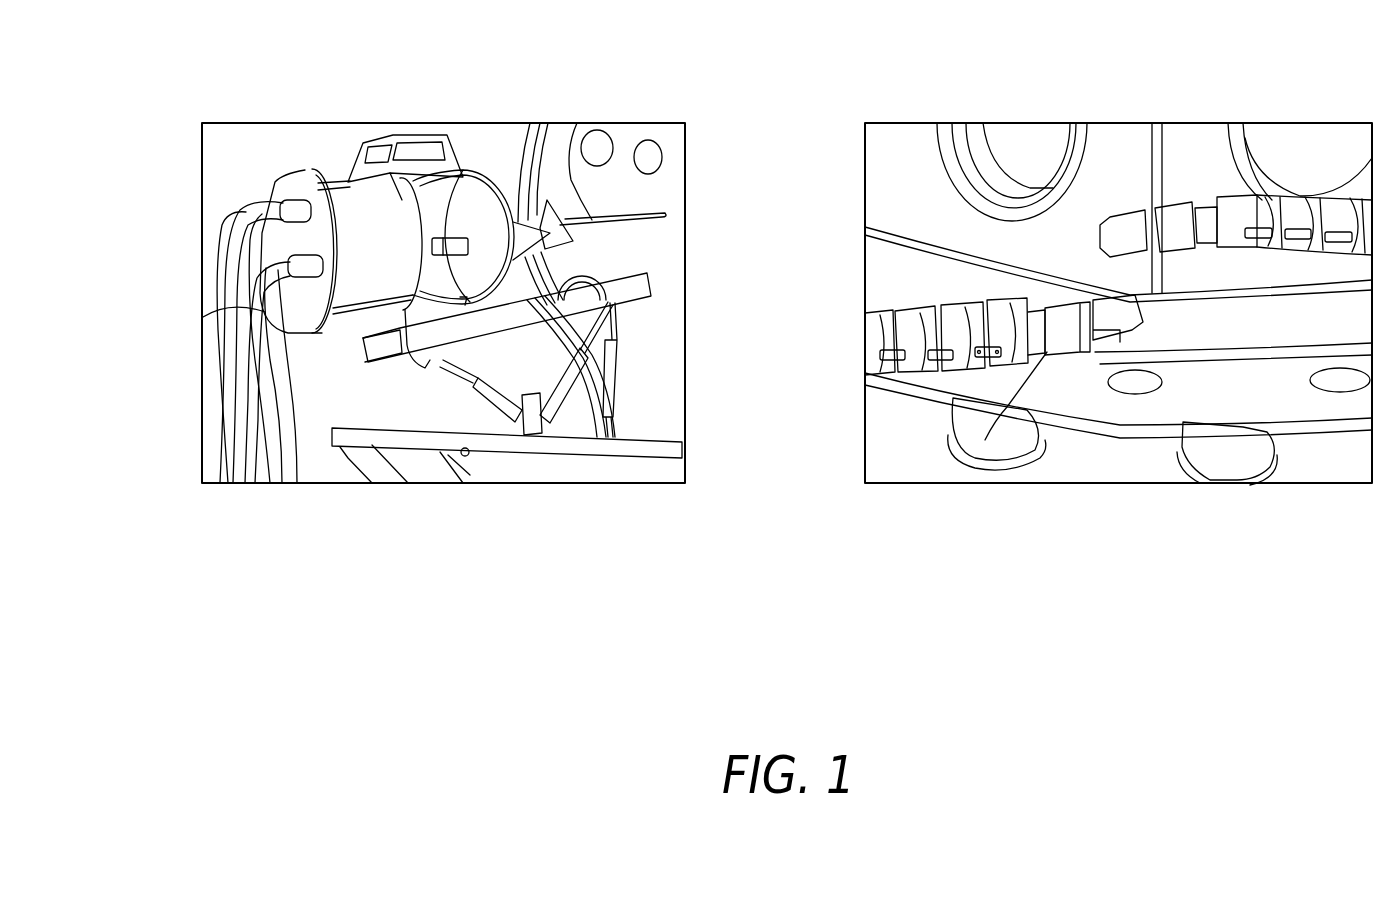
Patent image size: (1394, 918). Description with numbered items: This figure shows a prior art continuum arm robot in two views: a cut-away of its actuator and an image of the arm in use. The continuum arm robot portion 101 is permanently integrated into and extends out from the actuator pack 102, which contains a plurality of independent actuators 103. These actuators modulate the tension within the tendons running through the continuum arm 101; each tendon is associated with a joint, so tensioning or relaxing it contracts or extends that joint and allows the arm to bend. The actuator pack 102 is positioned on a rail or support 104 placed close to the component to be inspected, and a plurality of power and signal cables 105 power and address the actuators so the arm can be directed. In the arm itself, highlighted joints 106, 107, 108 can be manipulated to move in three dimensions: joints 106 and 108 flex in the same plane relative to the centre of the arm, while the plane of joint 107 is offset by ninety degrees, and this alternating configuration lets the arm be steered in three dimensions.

The continuum arm robot portion 101 is at (578, 122).
The actuator pack 102 is at (350, 182).
The independent actuators 103 is at (447, 236).
The rail or support 104 is at (640, 298).
The power and signal cables 105 is at (273, 317).
The joint 106 is at (893, 380).
The joint 107 is at (945, 300).
The joint 108 is at (992, 355).